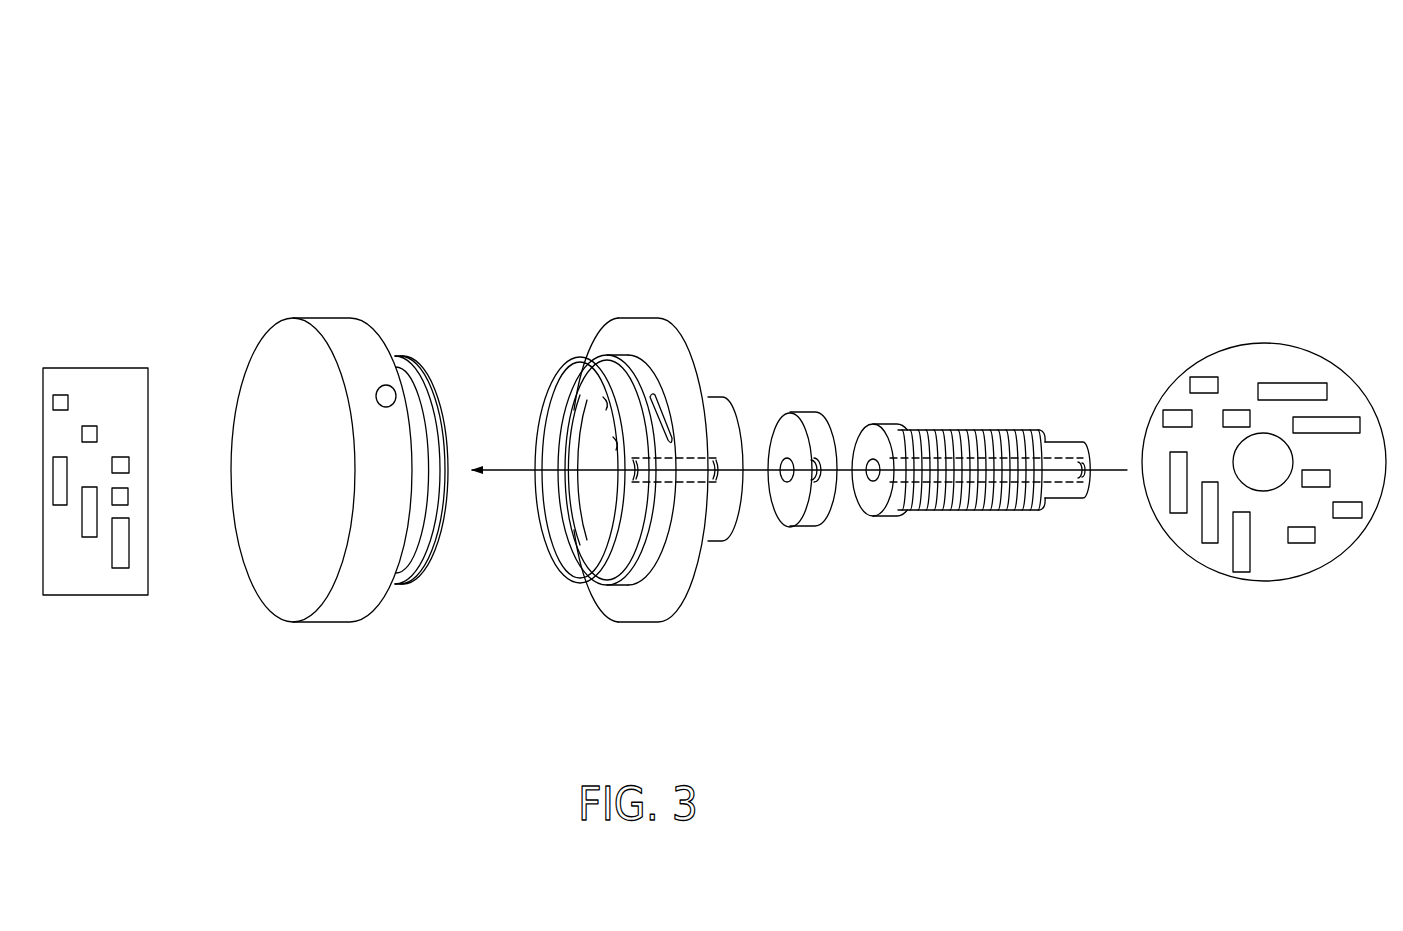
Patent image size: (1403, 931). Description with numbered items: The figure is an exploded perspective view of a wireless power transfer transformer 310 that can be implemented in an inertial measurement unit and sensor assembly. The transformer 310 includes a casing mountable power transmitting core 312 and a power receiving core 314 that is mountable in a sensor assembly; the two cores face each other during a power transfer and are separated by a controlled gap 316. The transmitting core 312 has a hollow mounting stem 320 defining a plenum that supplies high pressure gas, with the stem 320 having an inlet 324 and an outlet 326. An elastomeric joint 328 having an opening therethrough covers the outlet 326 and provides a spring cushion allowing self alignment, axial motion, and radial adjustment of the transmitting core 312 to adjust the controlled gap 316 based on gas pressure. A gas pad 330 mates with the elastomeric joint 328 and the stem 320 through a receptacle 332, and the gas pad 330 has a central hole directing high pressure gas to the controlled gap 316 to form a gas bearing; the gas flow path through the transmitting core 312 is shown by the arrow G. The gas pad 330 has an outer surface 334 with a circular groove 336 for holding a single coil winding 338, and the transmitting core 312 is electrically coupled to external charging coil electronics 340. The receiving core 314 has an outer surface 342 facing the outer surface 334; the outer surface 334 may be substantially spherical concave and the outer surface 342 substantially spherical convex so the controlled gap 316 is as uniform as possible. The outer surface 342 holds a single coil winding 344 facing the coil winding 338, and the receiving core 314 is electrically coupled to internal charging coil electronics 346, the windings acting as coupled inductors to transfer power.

The wireless power transfer transformer 310 is at (410, 158).
The power transmitting core 312 is at (1083, 287).
The power receiving core 314 is at (321, 506).
The controlled gap 316 is at (508, 575).
The hollow mounting stem 320 is at (939, 418).
The inlet 324 is at (1055, 438).
The outlet 326 is at (875, 500).
The elastomeric joint 328 is at (812, 517).
The gas pad 330 is at (652, 476).
The receptacle 332 is at (752, 402).
The outer surface 334 is at (605, 336).
The circular groove 336 is at (622, 580).
The single coil winding 338 is at (558, 373).
The external charging coil electronics 340 is at (1282, 571).
The outer surface 342 is at (374, 320).
The single coil winding 344 is at (415, 583).
The internal charging coil electronics 346 is at (93, 586).
The arrow G is at (503, 468).